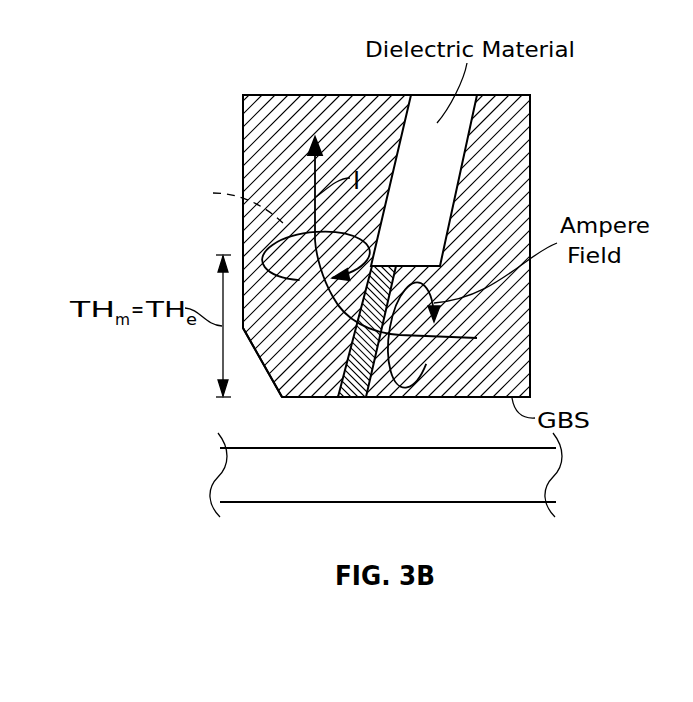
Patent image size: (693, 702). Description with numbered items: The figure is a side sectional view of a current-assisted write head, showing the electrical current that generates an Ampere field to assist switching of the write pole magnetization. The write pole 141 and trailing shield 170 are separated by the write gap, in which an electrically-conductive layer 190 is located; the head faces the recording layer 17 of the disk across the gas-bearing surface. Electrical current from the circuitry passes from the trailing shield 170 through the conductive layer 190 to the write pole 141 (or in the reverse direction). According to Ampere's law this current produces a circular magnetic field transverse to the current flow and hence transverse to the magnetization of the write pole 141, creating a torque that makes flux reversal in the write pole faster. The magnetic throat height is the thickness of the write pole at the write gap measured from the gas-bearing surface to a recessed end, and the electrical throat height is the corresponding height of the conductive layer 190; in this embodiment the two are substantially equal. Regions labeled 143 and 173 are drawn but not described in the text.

The recording layer 17 is at (216, 477).
The write pole 141 is at (243, 223).
The tapered leading edge of main pole 143 is at (284, 398).
The trailing shield 170 is at (515, 323).
The conductive notch / spin torque layer 173 is at (425, 398).
The conductive layer 190 is at (392, 262).